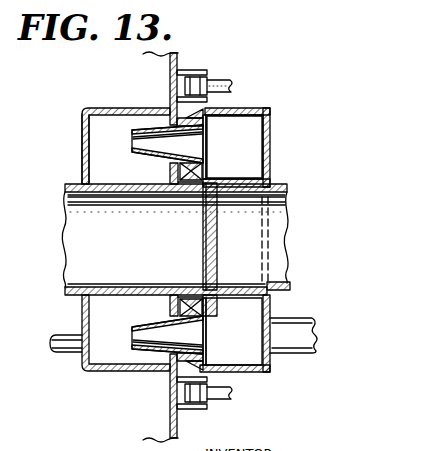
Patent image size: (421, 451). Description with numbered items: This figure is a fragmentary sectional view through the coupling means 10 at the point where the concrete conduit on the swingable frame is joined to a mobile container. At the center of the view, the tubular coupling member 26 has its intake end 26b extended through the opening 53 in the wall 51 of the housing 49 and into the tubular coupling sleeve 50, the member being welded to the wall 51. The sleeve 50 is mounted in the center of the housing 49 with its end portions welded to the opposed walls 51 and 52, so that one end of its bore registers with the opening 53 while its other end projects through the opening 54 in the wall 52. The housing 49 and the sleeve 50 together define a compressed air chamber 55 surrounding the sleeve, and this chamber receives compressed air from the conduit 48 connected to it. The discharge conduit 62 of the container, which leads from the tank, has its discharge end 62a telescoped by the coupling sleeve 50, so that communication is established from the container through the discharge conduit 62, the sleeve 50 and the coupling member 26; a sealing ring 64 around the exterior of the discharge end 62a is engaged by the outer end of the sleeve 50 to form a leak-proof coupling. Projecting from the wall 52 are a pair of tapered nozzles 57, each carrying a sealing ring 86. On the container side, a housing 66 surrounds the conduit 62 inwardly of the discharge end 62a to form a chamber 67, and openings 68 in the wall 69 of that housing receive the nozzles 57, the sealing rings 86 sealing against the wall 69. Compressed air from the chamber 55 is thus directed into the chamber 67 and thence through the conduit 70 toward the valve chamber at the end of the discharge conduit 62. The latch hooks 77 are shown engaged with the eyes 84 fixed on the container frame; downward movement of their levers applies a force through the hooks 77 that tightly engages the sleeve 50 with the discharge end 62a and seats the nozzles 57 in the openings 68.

The coupling means 10 is at (264, 143).
The tubular coupling member 26 is at (284, 210).
The intake end 26b is at (229, 287).
The conduit 48 is at (302, 328).
The housing 49 is at (262, 375).
The tubular coupling sleeve 50 is at (232, 179).
The wall 51 is at (268, 165).
The wall 52 is at (204, 172).
The opening 53 is at (272, 280).
The opening 54 is at (204, 282).
The compressed air chamber 55 is at (260, 116).
The tapered nozzles 57 is at (134, 140).
The discharge conduit 62 is at (62, 262).
The discharge end 62a is at (182, 245).
The sealing ring 64 is at (178, 297).
The housing 66 is at (97, 108).
The chamber 67 is at (93, 160).
The openings 68 is at (169, 123).
The wall 69 is at (170, 171).
The conduit 70 is at (70, 352).
The latch hooks 77 is at (229, 78).
The eyes 84 is at (196, 71).
The sealing rings 86 is at (204, 110).